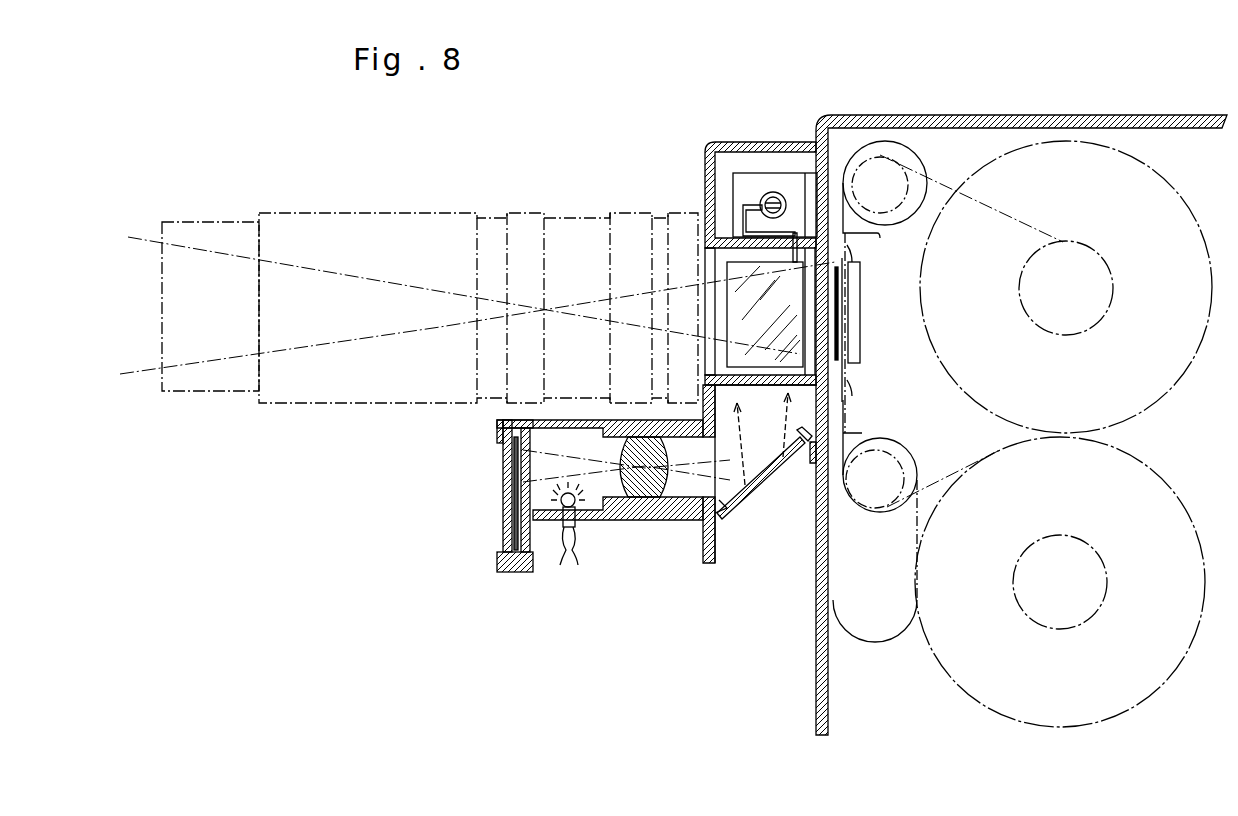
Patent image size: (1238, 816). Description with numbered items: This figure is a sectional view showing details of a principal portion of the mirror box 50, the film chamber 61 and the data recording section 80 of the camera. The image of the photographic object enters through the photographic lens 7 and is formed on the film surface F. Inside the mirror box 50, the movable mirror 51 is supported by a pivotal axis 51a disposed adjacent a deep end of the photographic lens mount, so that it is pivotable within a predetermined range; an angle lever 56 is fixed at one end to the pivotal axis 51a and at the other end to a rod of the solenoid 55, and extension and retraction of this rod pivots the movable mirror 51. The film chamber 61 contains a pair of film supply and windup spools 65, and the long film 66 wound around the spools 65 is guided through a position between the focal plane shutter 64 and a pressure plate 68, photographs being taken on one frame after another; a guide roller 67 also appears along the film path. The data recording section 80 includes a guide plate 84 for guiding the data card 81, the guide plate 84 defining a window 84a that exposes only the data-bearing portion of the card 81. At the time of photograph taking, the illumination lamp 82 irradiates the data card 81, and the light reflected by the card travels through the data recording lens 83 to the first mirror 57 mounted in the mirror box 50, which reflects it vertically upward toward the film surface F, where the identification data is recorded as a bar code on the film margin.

The photographic lens 7 is at (390, 212).
The mirror box 50 is at (705, 170).
The movable mirror 51 is at (727, 265).
The pivotal axis 51a is at (800, 228).
The solenoid 55 is at (775, 175).
The angle lever 56 is at (745, 205).
The first mirror 57 is at (765, 480).
The film chamber 61 is at (1222, 185).
The focal plane shutter 64 is at (838, 345).
The film supply and windup spools 65 is at (1150, 408).
The long film 66 is at (945, 478).
The guide roller 67 is at (880, 625).
The pressure plate 68 is at (857, 327).
The data recording section 80 is at (637, 512).
The data card 81 is at (503, 487).
The illumination lamp 82 is at (572, 522).
The data recording lens 83 is at (658, 490).
The guide plate 84 is at (503, 528).
The window 84a is at (515, 465).
The film surface F is at (852, 295).